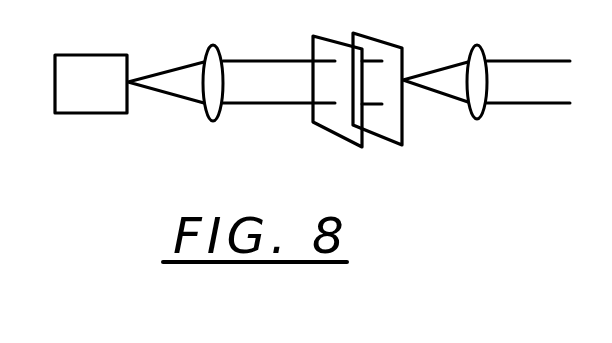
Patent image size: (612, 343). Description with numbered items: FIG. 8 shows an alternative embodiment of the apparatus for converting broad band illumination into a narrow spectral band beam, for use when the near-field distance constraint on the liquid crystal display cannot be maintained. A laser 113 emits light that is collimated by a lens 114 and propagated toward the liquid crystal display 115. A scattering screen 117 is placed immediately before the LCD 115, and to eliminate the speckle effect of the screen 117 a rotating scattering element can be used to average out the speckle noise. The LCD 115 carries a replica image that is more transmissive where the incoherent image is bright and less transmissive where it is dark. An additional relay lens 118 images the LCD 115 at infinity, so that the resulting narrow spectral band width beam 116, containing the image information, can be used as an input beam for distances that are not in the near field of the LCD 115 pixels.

The laser 113 is at (90, 55).
The lens 114 is at (205, 54).
The scattering screen 117 is at (333, 37).
The liquid crystal display 115 is at (388, 44).
The relay lens 118 is at (482, 49).
The narrow spectral band width beam 116 is at (545, 95).